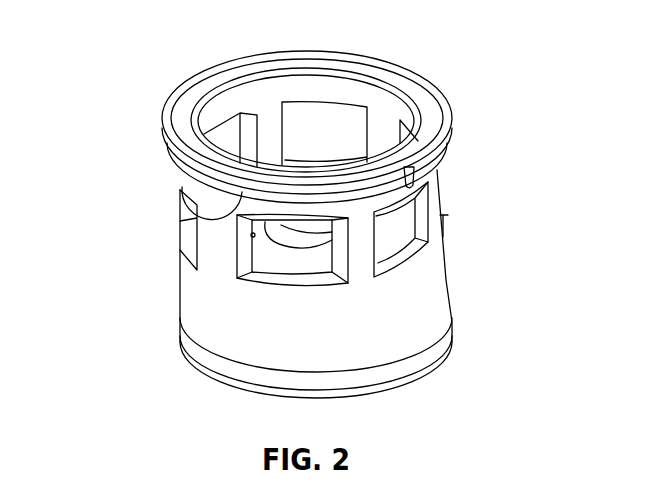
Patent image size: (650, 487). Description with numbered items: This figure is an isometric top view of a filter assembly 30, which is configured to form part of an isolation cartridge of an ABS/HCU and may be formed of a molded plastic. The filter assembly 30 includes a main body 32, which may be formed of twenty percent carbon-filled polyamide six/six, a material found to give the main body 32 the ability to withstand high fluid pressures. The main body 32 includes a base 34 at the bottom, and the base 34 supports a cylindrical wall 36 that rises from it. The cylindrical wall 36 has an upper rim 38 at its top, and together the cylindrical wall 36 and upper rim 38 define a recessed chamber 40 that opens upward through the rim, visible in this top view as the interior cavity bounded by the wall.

The filter assembly 30 is at (138, 60).
The main body 32 is at (447, 279).
The base 34 is at (447, 340).
The cylindrical wall 36 is at (217, 316).
The upper rim 38 is at (385, 62).
The recessed chamber 40 is at (280, 143).